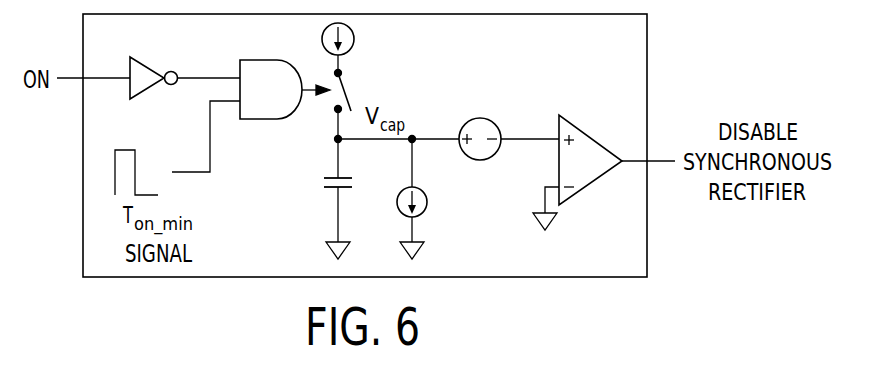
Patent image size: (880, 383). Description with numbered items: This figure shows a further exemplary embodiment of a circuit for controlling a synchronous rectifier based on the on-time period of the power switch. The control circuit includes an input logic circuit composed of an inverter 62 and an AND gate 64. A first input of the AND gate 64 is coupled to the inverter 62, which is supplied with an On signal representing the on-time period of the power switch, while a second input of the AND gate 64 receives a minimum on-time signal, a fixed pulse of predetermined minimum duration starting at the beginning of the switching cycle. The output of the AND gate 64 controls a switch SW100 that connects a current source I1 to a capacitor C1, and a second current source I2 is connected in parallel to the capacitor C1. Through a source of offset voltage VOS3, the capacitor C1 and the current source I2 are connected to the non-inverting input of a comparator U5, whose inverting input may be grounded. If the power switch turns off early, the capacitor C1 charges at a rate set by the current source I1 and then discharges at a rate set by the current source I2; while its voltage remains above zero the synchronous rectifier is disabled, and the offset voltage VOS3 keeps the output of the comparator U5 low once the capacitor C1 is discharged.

The inverter 62 is at (144, 63).
The AND gate 64 is at (265, 119).
The current source I1 is at (349, 48).
The switch SW100 is at (377, 105).
The capacitor C1 is at (352, 199).
The current source I2 is at (422, 199).
The source of offset voltage VOS3 is at (480, 125).
The comparator U5 is at (577, 172).